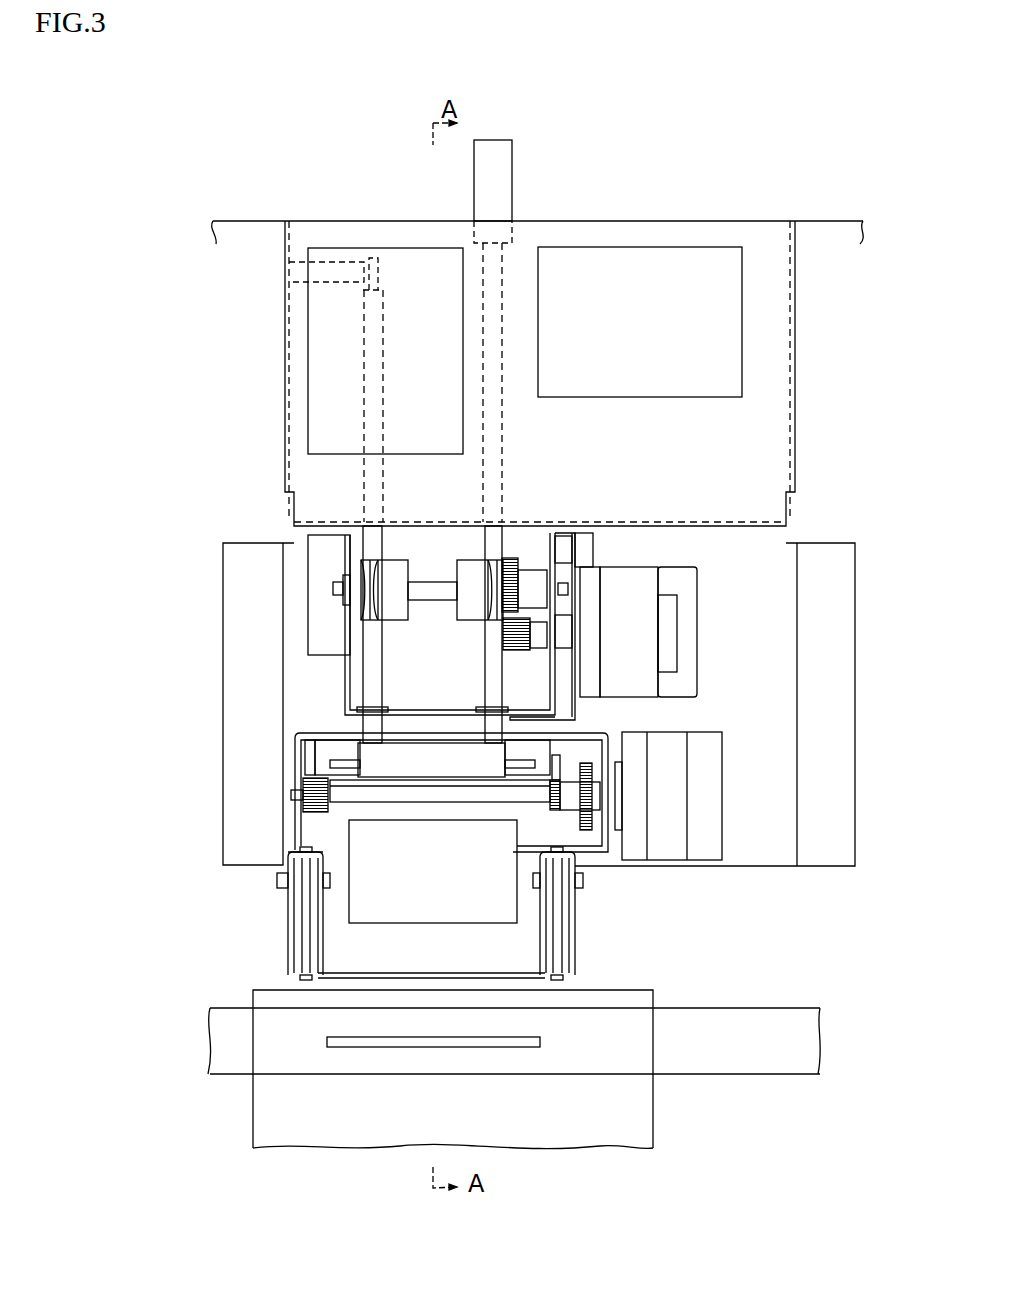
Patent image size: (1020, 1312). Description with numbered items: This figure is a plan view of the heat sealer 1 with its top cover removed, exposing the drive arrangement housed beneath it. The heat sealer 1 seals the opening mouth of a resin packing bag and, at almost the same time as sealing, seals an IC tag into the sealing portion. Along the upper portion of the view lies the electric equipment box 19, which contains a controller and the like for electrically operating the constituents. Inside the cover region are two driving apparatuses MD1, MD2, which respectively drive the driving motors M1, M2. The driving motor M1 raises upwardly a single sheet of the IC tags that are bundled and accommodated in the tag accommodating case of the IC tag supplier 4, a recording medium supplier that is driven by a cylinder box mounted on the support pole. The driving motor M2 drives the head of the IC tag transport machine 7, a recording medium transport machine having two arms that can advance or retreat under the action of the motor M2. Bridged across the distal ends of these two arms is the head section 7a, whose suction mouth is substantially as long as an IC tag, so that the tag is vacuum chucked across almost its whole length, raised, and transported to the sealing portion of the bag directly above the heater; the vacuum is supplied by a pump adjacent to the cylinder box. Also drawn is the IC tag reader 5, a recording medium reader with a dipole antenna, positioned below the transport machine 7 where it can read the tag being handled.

The heat sealer 1 is at (820, 488).
The electric equipment box 19 is at (828, 228).
The driving apparatus MD1 is at (690, 247).
The driving apparatus MD2 is at (400, 248).
The driving motor M1 is at (705, 745).
The driving motor M2 is at (690, 596).
The IC tag transport machine 7 is at (392, 657).
The head section 7a is at (466, 768).
The IC tag supplier 4 is at (326, 750).
The IC tag reader 5 is at (433, 913).